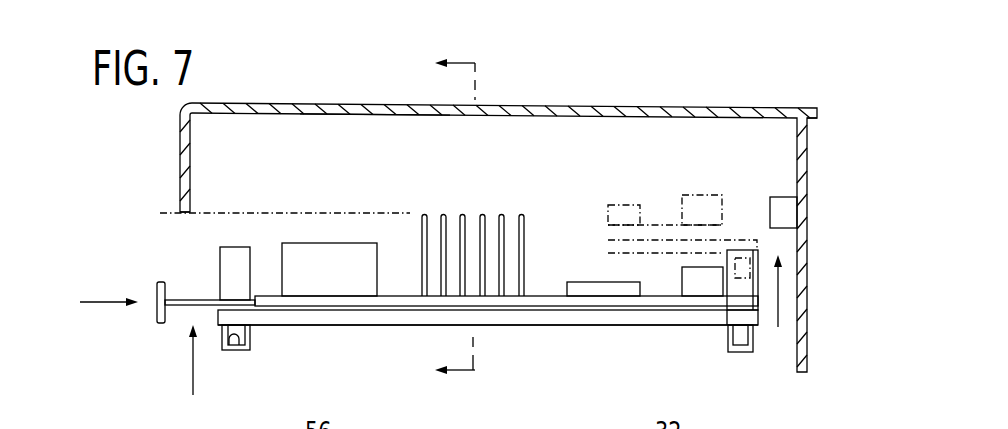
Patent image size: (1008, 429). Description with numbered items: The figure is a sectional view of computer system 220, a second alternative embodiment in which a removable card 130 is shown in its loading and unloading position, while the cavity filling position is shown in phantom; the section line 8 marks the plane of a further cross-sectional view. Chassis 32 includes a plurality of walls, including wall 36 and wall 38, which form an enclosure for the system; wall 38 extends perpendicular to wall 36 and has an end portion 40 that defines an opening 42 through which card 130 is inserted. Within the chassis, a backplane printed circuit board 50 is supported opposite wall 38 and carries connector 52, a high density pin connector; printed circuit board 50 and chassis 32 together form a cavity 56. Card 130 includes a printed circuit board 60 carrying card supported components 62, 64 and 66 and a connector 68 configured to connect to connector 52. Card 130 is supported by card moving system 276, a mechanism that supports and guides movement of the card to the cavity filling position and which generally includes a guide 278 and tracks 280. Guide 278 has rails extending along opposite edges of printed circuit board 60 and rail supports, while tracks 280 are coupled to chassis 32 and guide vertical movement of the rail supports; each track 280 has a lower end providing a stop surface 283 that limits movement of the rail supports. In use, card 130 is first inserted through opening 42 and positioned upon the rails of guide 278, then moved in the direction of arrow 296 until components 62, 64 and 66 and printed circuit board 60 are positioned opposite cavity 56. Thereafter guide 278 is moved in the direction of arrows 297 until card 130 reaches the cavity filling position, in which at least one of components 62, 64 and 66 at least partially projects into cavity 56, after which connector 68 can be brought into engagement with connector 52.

The section line 8- 8 is at (458, 220).
The chassis 32 is at (640, 108).
The wall 36 is at (540, 106).
The wall 38 is at (180, 152).
The end portion 40 is at (182, 210).
The opening 42 is at (183, 214).
The printed circuit board 50 is at (808, 238).
The connector 52 is at (786, 197).
The cavity 56 is at (367, 128).
The printed circuit board 60 is at (400, 296).
The card supported component 62 is at (330, 243).
The card supported component 64 is at (425, 215).
The card supported component 66 is at (602, 282).
The connector 68 is at (682, 275).
The removable card 130 is at (157, 292).
The computer system 220 is at (805, 91).
The card moving system 276 is at (510, 326).
The guide 278 is at (366, 327).
The tracks 280 is at (250, 337).
The stop surface 283 is at (236, 346).
The arrow 296 is at (108, 301).
The arrows 297 is at (193, 365).